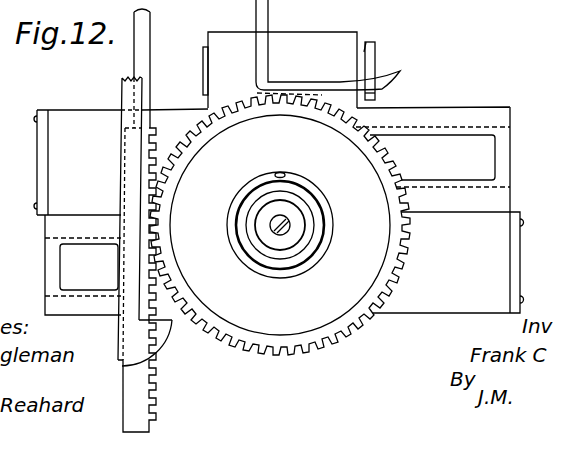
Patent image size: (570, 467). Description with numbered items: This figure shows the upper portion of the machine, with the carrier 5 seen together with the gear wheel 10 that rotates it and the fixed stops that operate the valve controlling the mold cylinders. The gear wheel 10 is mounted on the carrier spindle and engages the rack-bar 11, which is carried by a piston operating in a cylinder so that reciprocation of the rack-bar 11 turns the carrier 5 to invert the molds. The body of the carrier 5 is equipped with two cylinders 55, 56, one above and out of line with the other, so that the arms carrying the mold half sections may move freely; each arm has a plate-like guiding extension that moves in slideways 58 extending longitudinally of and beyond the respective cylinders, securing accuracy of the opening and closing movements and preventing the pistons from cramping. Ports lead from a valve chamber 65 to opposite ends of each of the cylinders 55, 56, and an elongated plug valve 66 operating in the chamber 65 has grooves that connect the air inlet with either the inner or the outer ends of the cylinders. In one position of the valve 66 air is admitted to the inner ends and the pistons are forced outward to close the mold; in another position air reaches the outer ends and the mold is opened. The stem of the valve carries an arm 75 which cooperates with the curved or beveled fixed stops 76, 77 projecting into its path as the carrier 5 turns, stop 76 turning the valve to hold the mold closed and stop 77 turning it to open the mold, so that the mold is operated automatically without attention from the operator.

The carrier 5 is at (233, 222).
The gear wheel 10 is at (280, 225).
The rack-bar 11 is at (140, 396).
The cylinder 55 is at (272, 218).
The cylinder 56 is at (427, 262).
The slideways 58 is at (449, 130).
The valve chamber 65 is at (280, 70).
The plug valve 66 is at (364, 42).
The valve arm 75 is at (380, 93).
The fixed stop 76 is at (388, 72).
The fixed stop 77 is at (145, 334).